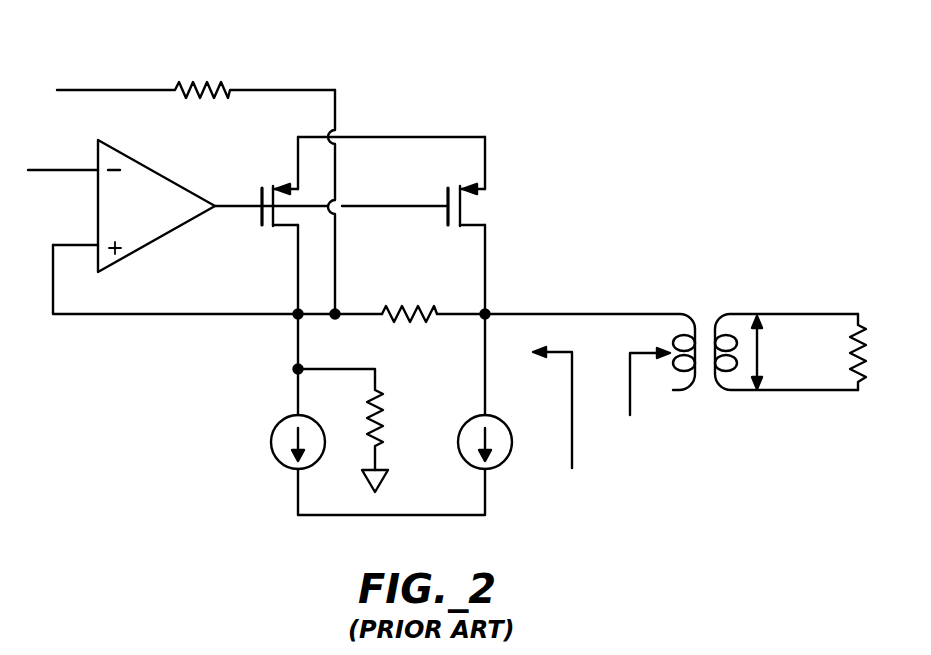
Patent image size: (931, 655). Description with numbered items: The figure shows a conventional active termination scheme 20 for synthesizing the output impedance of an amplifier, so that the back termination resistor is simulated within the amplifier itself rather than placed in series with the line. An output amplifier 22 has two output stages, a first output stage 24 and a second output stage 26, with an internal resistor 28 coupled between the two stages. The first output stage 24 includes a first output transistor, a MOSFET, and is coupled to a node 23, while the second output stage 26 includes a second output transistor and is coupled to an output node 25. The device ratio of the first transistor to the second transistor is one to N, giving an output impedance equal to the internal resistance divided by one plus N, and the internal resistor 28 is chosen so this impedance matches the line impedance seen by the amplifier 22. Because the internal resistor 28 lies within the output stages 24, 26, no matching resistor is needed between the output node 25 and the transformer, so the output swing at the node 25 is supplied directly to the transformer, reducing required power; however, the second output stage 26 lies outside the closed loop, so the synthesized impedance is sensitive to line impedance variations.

The active termination scheme 20 is at (456, 52).
The output amplifier 22 is at (167, 176).
The node 23 is at (336, 318).
The first output stage 24 is at (246, 240).
The output node 25 is at (488, 309).
The second output stage 26 is at (447, 239).
The internal resistor 28 is at (404, 320).